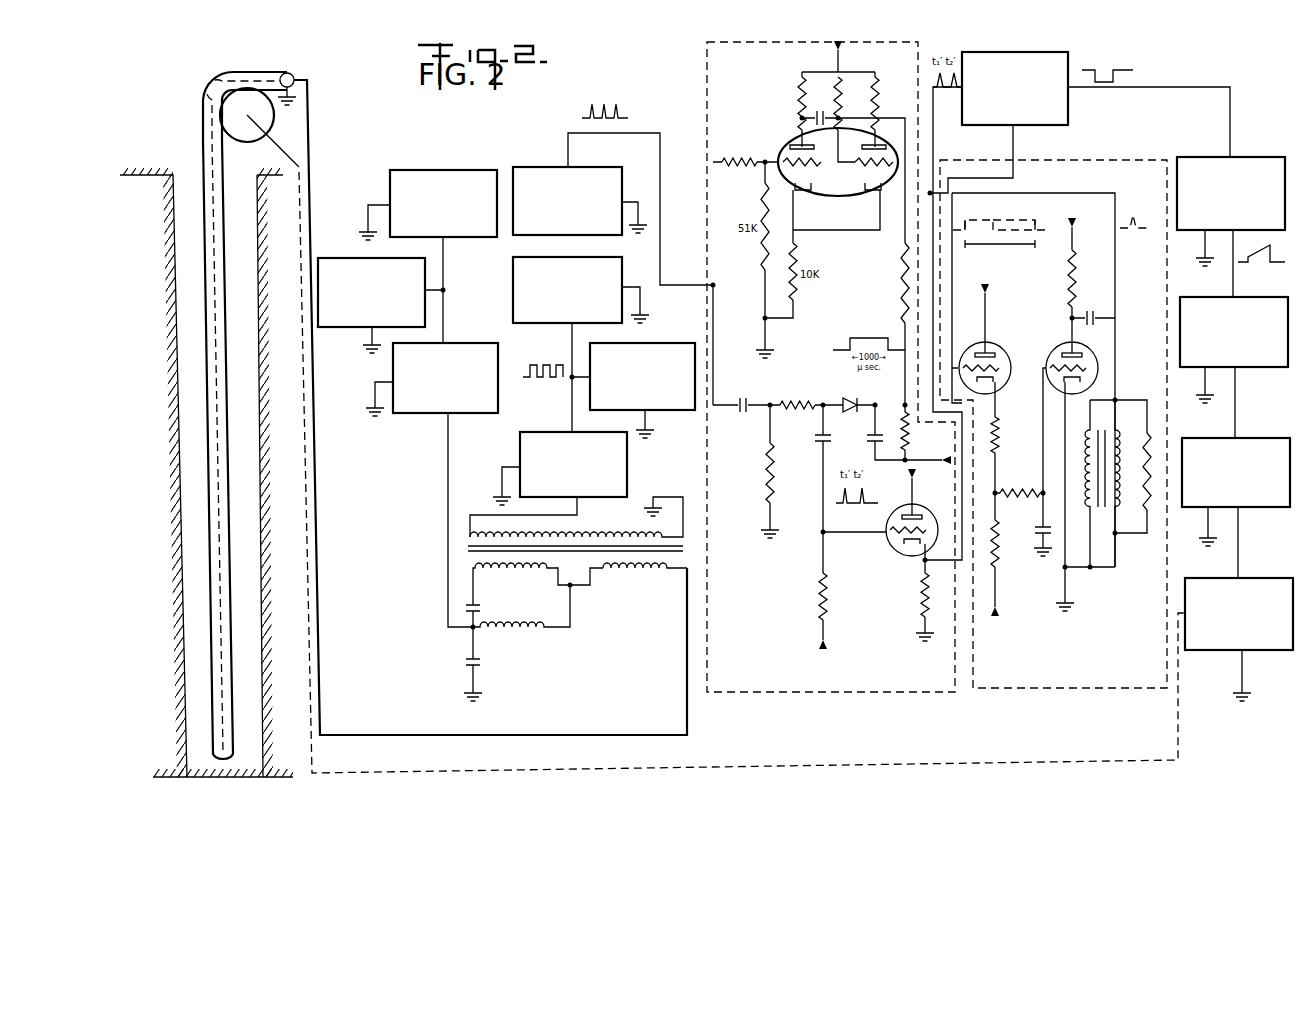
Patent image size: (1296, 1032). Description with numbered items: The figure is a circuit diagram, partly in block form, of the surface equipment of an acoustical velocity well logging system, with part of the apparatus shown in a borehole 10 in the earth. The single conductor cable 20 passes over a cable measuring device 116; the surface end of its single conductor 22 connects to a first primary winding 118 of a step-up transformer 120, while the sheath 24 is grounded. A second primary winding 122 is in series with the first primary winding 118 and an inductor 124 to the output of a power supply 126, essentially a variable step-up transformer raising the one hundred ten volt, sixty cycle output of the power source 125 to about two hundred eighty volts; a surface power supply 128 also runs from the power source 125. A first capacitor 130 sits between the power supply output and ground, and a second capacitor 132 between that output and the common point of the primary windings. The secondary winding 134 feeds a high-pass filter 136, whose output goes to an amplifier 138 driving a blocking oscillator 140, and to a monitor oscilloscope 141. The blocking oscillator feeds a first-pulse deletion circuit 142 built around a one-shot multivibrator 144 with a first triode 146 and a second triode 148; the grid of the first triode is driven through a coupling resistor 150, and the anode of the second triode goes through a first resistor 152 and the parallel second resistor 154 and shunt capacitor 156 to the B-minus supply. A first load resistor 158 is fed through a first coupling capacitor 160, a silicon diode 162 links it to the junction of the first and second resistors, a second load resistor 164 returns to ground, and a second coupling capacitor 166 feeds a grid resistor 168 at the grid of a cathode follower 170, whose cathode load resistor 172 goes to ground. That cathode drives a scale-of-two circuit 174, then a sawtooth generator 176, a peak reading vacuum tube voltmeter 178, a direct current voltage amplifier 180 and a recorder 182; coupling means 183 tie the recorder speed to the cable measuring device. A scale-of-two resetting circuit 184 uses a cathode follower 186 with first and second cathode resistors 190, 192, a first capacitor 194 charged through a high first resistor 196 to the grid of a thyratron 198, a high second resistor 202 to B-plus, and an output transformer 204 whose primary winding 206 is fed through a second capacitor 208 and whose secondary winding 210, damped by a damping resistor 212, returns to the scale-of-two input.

The borehole 10 is at (256, 360).
The single conductor cable 20 is at (234, 532).
The single conductor 22 is at (222, 614).
The sheath 24 is at (204, 305).
The cable measuring device 116 is at (236, 141).
The first primary winding 118 is at (649, 573).
The step-up transformer 120 is at (692, 550).
The second primary winding 122 is at (473, 568).
The inductor 124 is at (552, 634).
The power source 125 is at (351, 258).
The power supply 126 is at (430, 415).
The surface power supply 128 is at (443, 170).
The first capacitor 130 is at (465, 662).
The second capacitor 132 is at (482, 612).
The secondary winding 134 is at (622, 530).
The high-pass filter 136 is at (520, 448).
The amplifier 138 is at (513, 271).
The blocking oscillator 140 is at (600, 167).
The monitor oscilloscope 141 is at (681, 343).
The first-pulse deletion circuit 142 is at (841, 698).
The one-shot multivibrator 144 is at (848, 190).
The first triode 146 is at (808, 198).
The second triode 148 is at (885, 198).
The coupling resistor 150 is at (750, 159).
The first resistor 152 is at (903, 310).
The second resistor 154 is at (911, 441).
The shunt capacitor 156 is at (868, 440).
The first load resistor 158 is at (815, 393).
The first coupling capacitor 160 is at (745, 415).
The silicon diode 162 is at (862, 398).
The second load resistor 164 is at (768, 497).
The second coupling capacitor 166 is at (815, 442).
The grid resistor 168 is at (830, 596).
The cathode follower 170 is at (895, 549).
The load resistor 172 is at (918, 586).
The scale-of-two circuit 174 is at (1048, 52).
The sawtooth generator 176 is at (1255, 157).
The peak reading vacuum tube voltmeter 178 is at (1265, 370).
The direct current voltage amplifier 180 is at (1275, 510).
The recorder 182 is at (1283, 652).
The coupling means 183 is at (948, 770).
The scale-of-two resetting circuit 184 is at (1078, 698).
The cathode follower 186 is at (1012, 338).
The first cathode resistor 190 is at (997, 419).
The second cathode resistor 192 is at (996, 576).
The first capacitor 194 is at (1035, 540).
The first resistor 196 is at (1020, 488).
The thyratron 198 is at (1051, 346).
The second resistor 202 is at (1063, 283).
The output transformer 204 is at (1106, 499).
The primary winding 206 is at (1088, 500).
The second capacitor 208 is at (1085, 310).
The secondary winding 210 is at (1104, 483).
The damping resistor 212 is at (1143, 500).